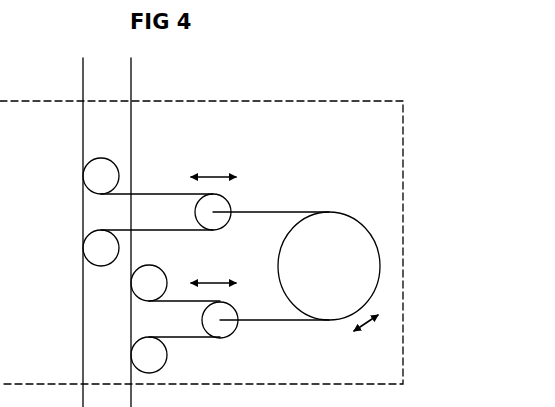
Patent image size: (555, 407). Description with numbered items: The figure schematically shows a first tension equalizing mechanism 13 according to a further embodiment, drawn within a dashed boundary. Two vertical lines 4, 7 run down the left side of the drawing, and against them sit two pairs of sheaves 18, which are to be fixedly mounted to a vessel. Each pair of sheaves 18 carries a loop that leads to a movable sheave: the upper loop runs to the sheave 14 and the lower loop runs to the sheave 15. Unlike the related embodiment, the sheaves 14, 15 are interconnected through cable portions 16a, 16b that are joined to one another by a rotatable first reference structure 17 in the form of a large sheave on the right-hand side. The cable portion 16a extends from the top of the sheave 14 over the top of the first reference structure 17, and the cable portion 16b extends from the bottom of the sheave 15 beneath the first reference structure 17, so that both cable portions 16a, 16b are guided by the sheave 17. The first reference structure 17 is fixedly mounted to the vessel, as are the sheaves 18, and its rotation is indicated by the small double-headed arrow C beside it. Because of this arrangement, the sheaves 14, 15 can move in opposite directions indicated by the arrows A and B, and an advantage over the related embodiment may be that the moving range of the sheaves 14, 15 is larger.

The guide rail 4 is at (83, 117).
The guide rail 7 is at (131, 112).
The first tension equalizing mechanism 13 is at (403, 165).
The sheave 14 is at (222, 199).
The sheave 15 is at (228, 327).
The cable portion 16a is at (285, 212).
The cable portion 16b is at (290, 320).
The first reference structure 17 is at (367, 261).
The sheaves 18 is at (101, 178).
The arrow A is at (214, 174).
The arrow B is at (215, 280).
The direction of movement C is at (357, 334).